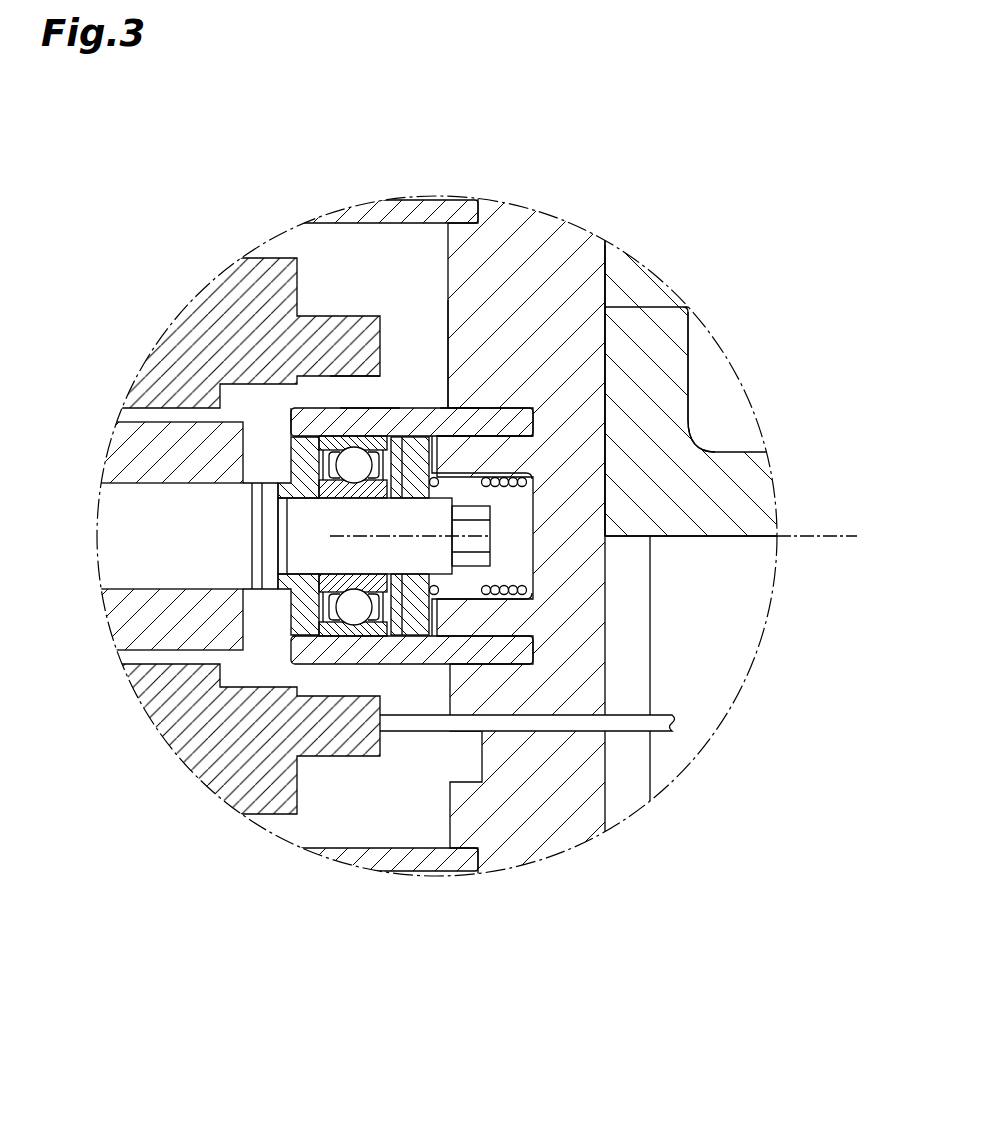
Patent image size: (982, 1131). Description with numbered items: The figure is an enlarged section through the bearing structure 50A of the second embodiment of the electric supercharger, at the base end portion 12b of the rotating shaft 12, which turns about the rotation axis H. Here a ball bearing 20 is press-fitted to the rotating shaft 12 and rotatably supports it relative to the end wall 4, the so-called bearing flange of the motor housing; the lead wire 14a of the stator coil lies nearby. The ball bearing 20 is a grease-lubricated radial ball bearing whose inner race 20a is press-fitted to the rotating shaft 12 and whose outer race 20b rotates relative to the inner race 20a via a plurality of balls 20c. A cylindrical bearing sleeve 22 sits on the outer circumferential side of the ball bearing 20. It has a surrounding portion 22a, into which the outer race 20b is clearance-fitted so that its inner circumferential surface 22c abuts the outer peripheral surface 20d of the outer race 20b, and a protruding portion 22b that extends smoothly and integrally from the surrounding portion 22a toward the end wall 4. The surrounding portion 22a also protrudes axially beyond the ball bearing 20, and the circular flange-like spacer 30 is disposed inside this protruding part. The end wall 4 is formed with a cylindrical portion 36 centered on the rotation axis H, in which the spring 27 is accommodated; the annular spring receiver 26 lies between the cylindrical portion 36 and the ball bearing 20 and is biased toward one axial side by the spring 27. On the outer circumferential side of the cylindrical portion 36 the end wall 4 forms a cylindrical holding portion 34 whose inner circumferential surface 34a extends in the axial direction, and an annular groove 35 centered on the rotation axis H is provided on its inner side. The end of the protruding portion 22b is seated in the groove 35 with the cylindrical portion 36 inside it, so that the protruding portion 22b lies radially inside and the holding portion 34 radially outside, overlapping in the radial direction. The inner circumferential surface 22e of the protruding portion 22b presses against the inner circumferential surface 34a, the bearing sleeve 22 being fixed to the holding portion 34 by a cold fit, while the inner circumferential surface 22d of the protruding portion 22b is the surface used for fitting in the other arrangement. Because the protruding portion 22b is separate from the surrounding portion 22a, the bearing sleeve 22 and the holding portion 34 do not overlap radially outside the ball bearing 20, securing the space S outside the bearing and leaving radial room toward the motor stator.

The end wall 4 is at (575, 555).
The rotating shaft 12 is at (160, 553).
The base end portion 12b is at (313, 535).
The lead wire 14a is at (343, 330).
The ball bearing 20 is at (278, 690).
The inner race 20a is at (318, 628).
The outer race 20b is at (354, 607).
The balls 20c is at (343, 622).
The outer peripheral surface 20d is at (500, 392).
The bearing sleeve 22 is at (318, 396).
The surrounding portion 22a is at (378, 408).
The protruding portion 22b is at (457, 410).
The inner circumferential surface 22c is at (296, 408).
The inner circumferential surface 22d is at (612, 306).
The inner circumferential surface 22e is at (480, 410).
The spring receiver 26 is at (412, 600).
The spring 27 is at (533, 590).
The spacer 30 is at (250, 678).
The holding portion 34 is at (538, 407).
The inner circumferential surface 34a is at (560, 322).
The annular groove 35 is at (535, 645).
The cylindrical portion 36 is at (478, 457).
The bearing structure 50A is at (300, 603).
The space S is at (373, 390).
The rotation axis H is at (838, 535).